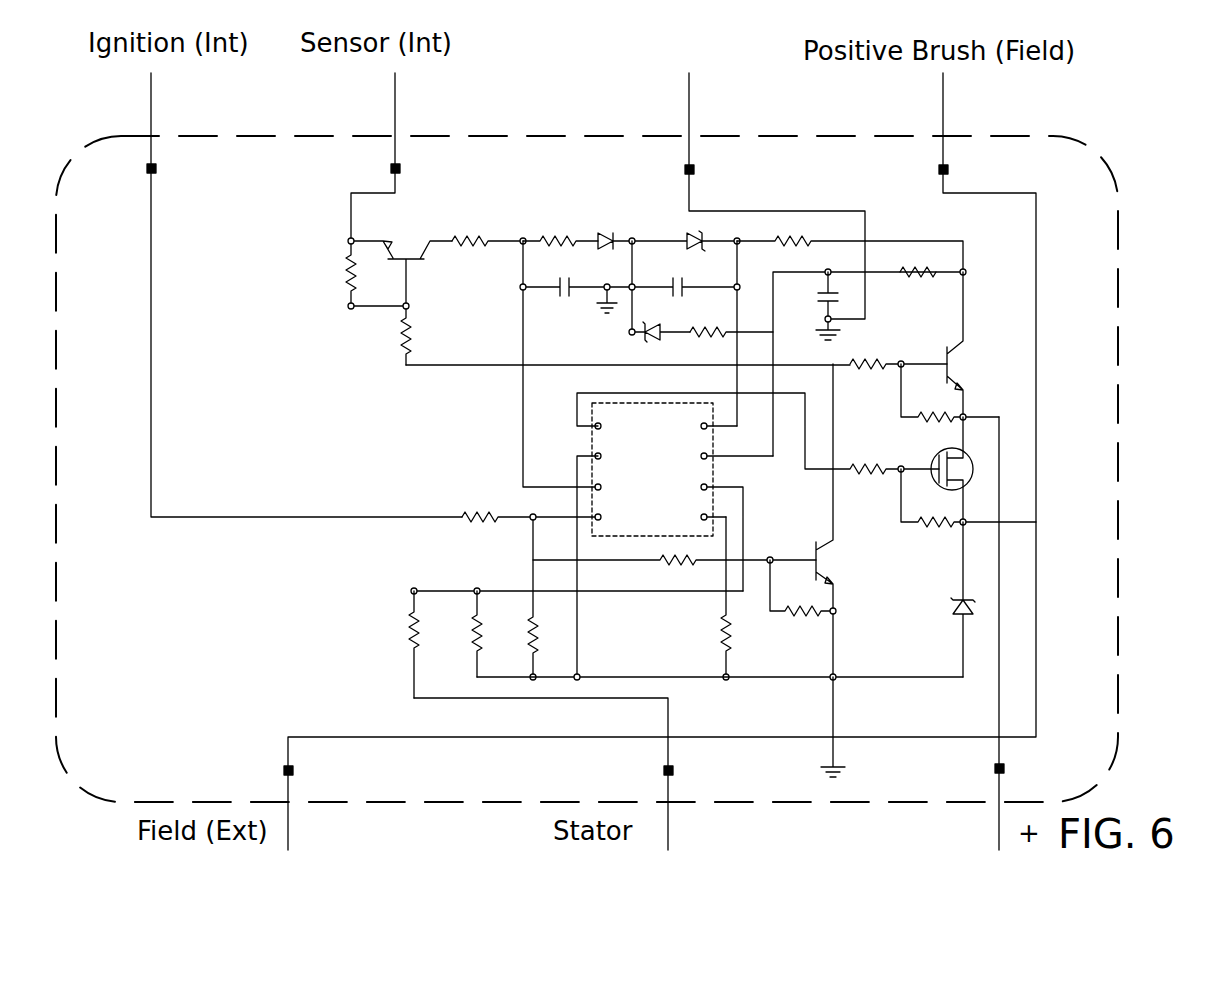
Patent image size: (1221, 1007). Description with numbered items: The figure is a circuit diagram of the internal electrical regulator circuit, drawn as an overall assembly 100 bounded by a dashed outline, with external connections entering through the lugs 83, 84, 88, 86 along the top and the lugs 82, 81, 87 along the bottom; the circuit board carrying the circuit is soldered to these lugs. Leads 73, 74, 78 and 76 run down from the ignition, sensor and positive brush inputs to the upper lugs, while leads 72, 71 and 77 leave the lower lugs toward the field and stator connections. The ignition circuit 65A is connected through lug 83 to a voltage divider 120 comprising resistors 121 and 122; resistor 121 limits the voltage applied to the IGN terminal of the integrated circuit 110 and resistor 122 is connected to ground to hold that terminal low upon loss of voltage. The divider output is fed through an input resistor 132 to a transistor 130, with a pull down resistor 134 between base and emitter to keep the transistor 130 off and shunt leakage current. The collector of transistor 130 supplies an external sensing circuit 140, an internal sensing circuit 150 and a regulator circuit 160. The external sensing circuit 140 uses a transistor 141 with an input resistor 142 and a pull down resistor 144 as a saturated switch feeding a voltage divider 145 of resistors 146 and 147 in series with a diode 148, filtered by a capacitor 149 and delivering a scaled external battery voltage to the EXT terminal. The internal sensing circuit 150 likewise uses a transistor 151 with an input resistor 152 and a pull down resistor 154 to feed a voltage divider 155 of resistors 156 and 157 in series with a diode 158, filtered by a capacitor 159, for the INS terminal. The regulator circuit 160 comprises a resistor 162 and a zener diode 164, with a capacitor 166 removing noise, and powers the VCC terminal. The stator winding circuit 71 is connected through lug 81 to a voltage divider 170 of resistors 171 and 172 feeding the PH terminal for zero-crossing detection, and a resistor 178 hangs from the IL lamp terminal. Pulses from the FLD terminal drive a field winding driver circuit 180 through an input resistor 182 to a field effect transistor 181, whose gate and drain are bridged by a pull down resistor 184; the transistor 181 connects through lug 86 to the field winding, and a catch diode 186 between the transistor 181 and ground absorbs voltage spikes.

The voltage regulator housing 100 is at (92, 92).
The ignition circuit 65A is at (153, 76).
The ignition terminal wire 73 is at (153, 106).
The sensor terminal wire 74 is at (397, 108).
The positive terminal wire 78 is at (687, 108).
The positive brush wire 76 is at (940, 107).
The lug 83 is at (157, 170).
The lug 84 is at (400, 170).
The lug 88 is at (694, 170).
The lug 86 is at (948, 170).
The lug 82 is at (293, 770).
The lug 81 is at (673, 770).
The lug 87 is at (1004, 768).
The field wire 72 is at (290, 830).
The stator winding circuit 71 is at (670, 830).
The output wire 77 is at (997, 822).
The external sensing circuit 140 is at (392, 326).
The transistor 141 is at (420, 262).
The input resistor 142 is at (412, 330).
The pull down resistor 144 is at (348, 276).
The voltage divider 145 is at (521, 236).
The resistor 146 is at (470, 238).
The resistor 147 is at (563, 238).
The diode 148 is at (610, 230).
The filter capacitor 149 is at (560, 300).
The zener diode 164 is at (690, 236).
The capacitor 166 is at (671, 282).
The diode 158 is at (642, 340).
The resistor 157 is at (722, 338).
The regulator circuit 160 is at (851, 303).
The resistor 162 is at (800, 238).
The voltage divider 155 is at (848, 272).
The resistor 156 is at (906, 278).
The filter capacitor 159 is at (822, 288).
The internal sensing circuit 150 is at (942, 347).
The transistor 151 is at (958, 358).
The input resistor 152 is at (866, 360).
The pull down resistor 154 is at (940, 412).
The field winding driver circuit 180 is at (832, 535).
The field effect transistor 181 is at (972, 474).
The input resistor 182 is at (862, 466).
The pull down resistor 184 is at (935, 530).
The catch diode 186 is at (945, 608).
The integrated circuit 110 is at (710, 470).
The voltage divider 120 is at (534, 576).
The resistor 121 is at (483, 512).
The resistor 122 is at (540, 630).
The input resistor 132 is at (672, 568).
The transistor 130 is at (828, 550).
The pull down resistor 134 is at (800, 620).
The resistor 178 is at (715, 628).
The voltage divider 170 is at (541, 630).
The resistor 171 is at (410, 635).
The resistor 172 is at (472, 636).